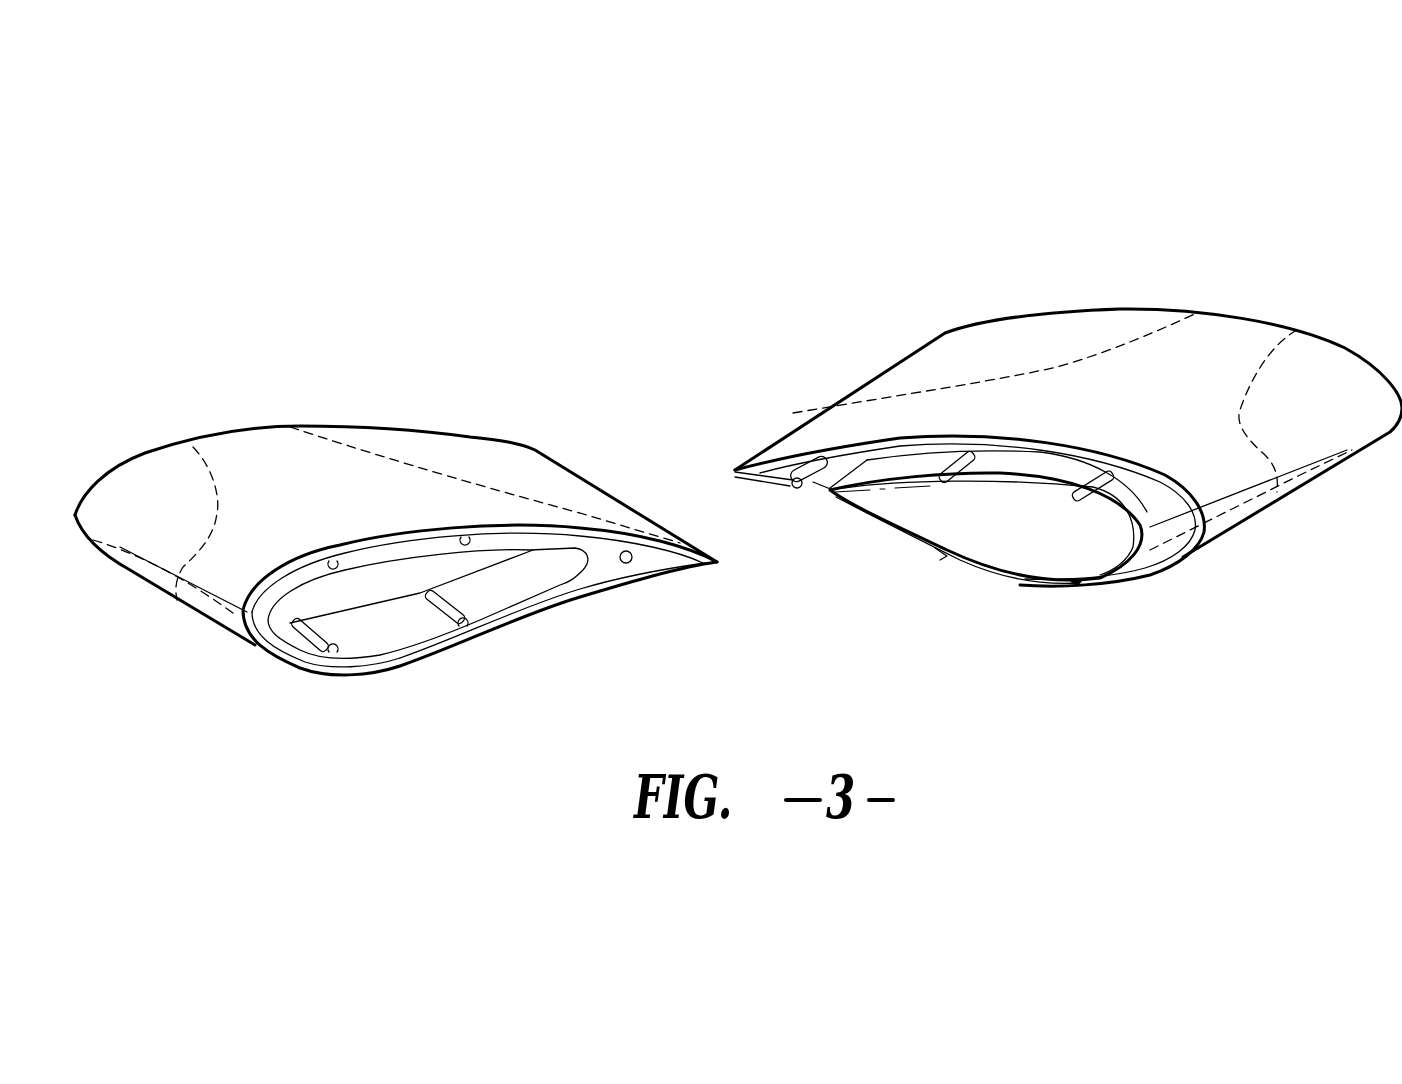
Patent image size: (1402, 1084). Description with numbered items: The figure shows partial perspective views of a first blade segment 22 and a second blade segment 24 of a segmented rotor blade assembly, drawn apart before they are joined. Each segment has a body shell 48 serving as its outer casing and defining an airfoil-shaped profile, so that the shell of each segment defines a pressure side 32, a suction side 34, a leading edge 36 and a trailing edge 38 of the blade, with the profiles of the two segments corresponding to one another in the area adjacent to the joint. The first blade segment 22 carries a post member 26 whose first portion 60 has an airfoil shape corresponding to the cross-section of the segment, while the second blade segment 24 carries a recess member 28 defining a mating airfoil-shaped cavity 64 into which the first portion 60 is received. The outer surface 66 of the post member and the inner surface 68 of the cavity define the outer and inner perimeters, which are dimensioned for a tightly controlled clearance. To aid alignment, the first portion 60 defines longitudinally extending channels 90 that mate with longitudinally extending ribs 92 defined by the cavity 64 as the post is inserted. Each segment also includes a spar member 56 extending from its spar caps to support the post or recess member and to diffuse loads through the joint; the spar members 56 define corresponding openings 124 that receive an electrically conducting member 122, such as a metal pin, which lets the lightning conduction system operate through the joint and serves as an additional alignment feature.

The first blade segment 22 is at (1224, 257).
The second blade segment 24 is at (272, 375).
The post member 26 is at (913, 455).
The recess member 28 is at (518, 538).
The pressure side 32 is at (303, 670).
The suction side 34 is at (185, 455).
The leading edge 36 is at (150, 567).
The trailing edge 38 is at (723, 565).
The body shell 48 is at (298, 447).
The spar member 56 is at (394, 448).
The first portion 60 is at (927, 517).
The cavity 64 is at (390, 637).
The outer surface 66 is at (1193, 513).
The inner surface 68 is at (513, 583).
The longitudinally extending channels 90 is at (1010, 452).
The longitudinally extending ribs 92 is at (333, 563).
The electrically conducting member 122 is at (797, 490).
The openings 124 is at (637, 562).